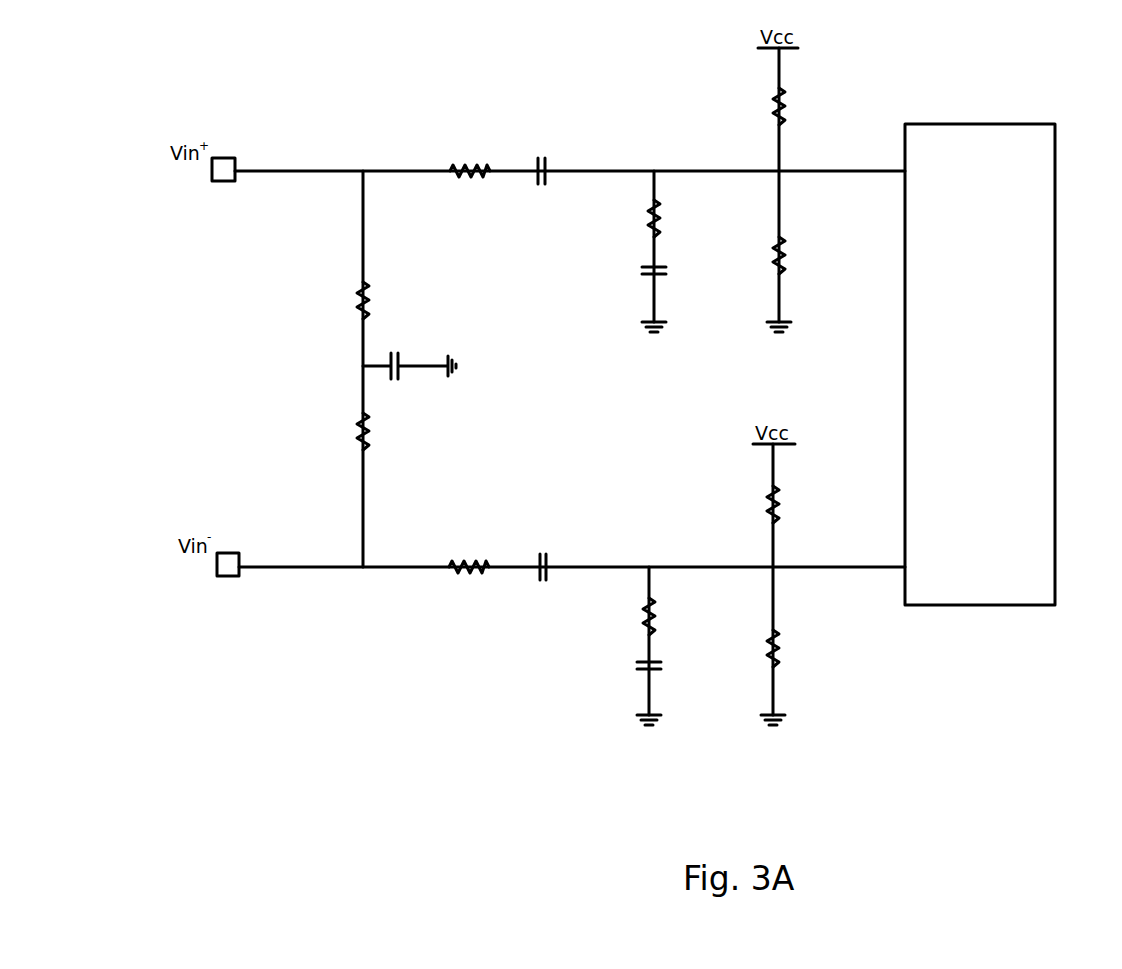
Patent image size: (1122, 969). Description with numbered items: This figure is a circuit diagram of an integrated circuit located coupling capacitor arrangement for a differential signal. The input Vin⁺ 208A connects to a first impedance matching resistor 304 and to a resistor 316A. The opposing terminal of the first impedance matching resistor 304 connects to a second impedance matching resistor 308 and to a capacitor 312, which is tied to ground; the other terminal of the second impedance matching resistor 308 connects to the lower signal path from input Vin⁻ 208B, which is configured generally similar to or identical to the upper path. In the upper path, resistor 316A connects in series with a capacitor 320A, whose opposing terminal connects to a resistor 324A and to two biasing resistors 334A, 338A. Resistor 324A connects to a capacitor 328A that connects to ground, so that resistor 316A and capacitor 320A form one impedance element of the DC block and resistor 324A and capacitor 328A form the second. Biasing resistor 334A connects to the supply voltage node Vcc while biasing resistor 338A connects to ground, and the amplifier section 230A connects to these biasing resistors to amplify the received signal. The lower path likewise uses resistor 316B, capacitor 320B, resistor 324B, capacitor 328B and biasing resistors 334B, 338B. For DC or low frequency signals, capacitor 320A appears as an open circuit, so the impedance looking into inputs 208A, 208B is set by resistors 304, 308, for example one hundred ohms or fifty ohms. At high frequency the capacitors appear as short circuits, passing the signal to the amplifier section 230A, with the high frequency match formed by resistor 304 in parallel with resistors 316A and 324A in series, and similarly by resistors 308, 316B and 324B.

The input Vin⁺ 208A is at (213, 184).
The input Vin⁻ 208B is at (219, 578).
The first impedance matching resistor 304 is at (356, 305).
The second impedance matching resistor 308 is at (356, 438).
The capacitor 312 is at (399, 352).
The resistor 316A is at (465, 168).
The resistor 316B is at (462, 574).
The capacitor 320A is at (537, 178).
The capacitor 320B is at (540, 580).
The resistor 324A is at (660, 215).
The resistor 324B is at (645, 615).
The capacitor 328A is at (647, 272).
The capacitor 328B is at (641, 668).
The biasing resistor 334A is at (787, 103).
The biasing resistor 334B is at (770, 505).
The biasing resistor 338A is at (787, 255).
The biasing resistor 338B is at (770, 650).
The amplifier section 230A is at (1003, 124).